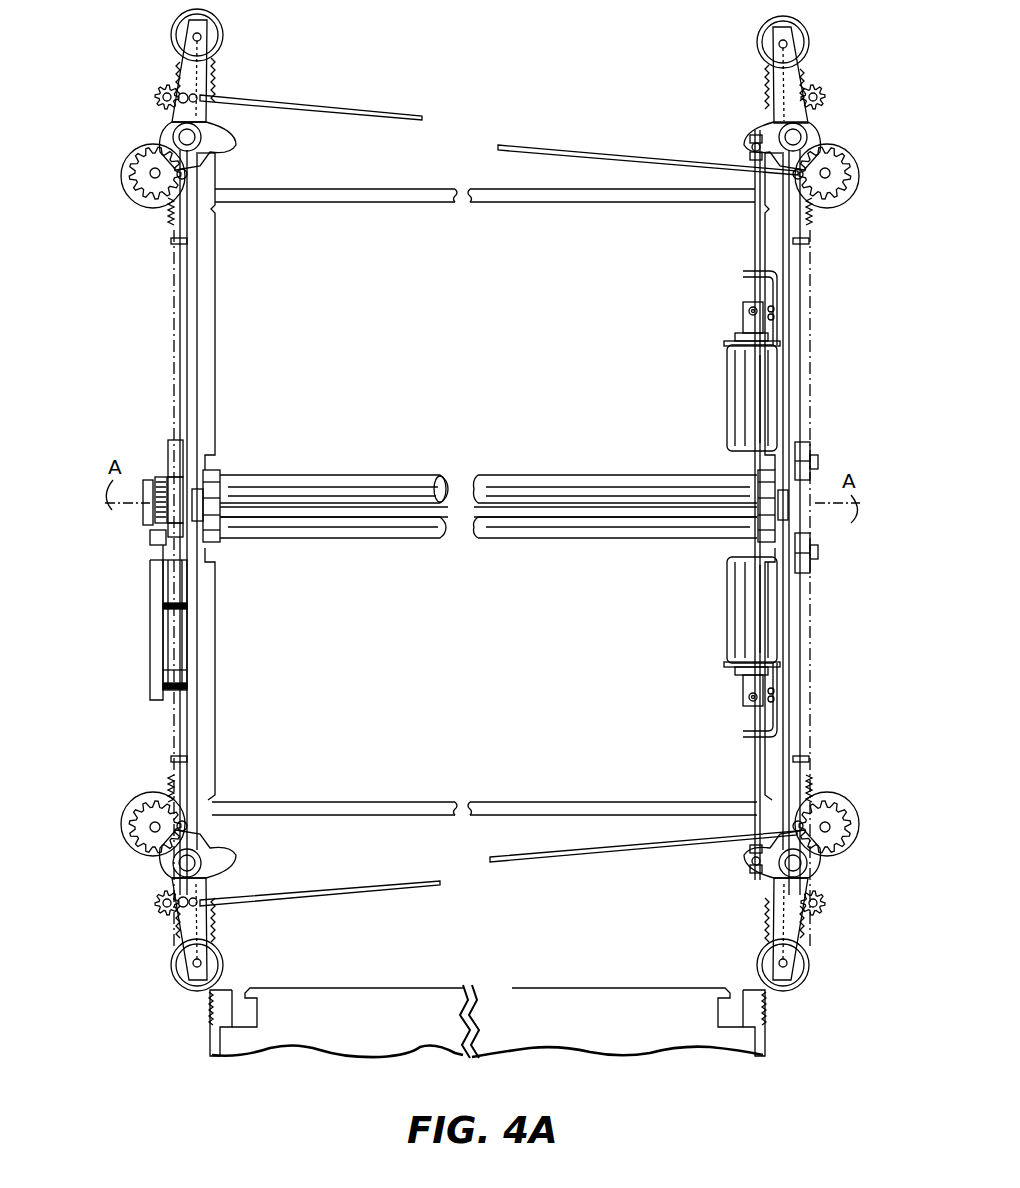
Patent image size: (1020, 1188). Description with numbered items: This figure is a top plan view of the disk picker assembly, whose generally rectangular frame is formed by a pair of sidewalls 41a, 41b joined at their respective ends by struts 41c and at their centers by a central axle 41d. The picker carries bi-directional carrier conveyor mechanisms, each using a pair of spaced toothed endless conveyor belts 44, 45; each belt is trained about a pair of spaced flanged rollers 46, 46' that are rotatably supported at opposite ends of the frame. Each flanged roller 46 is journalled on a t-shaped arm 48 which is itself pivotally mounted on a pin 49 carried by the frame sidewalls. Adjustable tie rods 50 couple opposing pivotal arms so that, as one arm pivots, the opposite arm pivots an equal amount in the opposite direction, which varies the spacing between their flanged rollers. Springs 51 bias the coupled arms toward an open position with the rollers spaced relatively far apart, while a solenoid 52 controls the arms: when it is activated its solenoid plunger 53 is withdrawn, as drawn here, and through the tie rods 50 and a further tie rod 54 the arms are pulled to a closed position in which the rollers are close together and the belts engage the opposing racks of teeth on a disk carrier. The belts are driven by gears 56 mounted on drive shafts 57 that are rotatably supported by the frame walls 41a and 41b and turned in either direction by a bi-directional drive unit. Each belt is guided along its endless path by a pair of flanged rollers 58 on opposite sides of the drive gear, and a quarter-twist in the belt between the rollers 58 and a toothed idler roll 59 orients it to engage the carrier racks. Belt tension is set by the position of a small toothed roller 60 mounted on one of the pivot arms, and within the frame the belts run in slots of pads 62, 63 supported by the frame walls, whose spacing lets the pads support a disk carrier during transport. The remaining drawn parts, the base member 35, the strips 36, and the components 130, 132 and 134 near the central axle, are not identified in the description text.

The base plate 35 is at (425, 1000).
The guide strip 36 is at (206, 1019).
The sidewall 41a is at (790, 362).
The sidewall 41b is at (184, 357).
The strut 41c is at (468, 206).
The central axle 41d is at (347, 478).
The endless conveyor belt 44 is at (760, 935).
The endless conveyor belt 45 is at (216, 932).
The flanged roller 46 is at (518, 965).
The flanged roller 46' is at (490, 37).
The t-shaped arm 48 is at (212, 82).
The pin 49 is at (208, 122).
The adjustable tie rod 50 is at (346, 108).
The spring 51 is at (171, 214).
The solenoid 52 is at (742, 392).
The solenoid plunger 53 is at (744, 320).
The tie rod 54 is at (753, 259).
The drive gear 56 is at (210, 541).
The drive shaft 57 is at (430, 472).
The flanged roller 58 is at (170, 440).
The toothed idler roll 59 is at (150, 150).
The small toothed roller 60 is at (168, 86).
The pad 62 is at (213, 330).
The pad 63 is at (212, 722).
The bearing 130 is at (160, 477).
The collar 132 is at (158, 537).
The guide block 134 is at (157, 630).